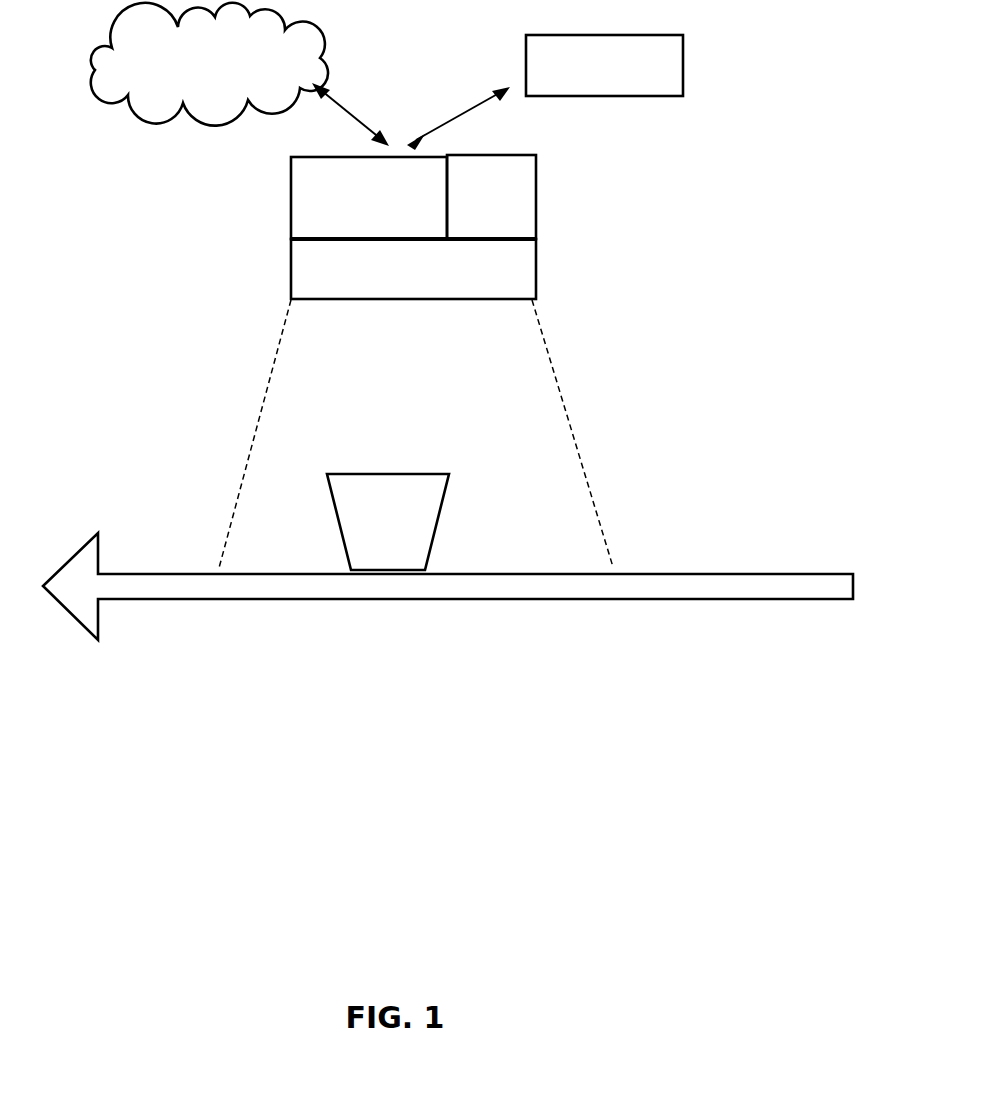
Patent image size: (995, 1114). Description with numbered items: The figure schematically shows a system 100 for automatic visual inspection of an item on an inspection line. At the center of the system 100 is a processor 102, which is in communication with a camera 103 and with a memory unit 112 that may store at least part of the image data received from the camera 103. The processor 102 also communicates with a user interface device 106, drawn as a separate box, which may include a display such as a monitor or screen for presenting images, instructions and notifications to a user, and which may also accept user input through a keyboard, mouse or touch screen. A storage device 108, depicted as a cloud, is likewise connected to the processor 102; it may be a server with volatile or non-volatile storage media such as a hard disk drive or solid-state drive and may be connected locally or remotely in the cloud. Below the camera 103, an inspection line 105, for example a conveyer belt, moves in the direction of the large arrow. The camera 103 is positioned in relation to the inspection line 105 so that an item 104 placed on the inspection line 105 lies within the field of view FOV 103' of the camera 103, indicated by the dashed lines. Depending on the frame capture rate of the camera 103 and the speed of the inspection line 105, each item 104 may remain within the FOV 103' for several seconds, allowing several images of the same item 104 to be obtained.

The system 100 is at (584, 196).
The processor 102 is at (377, 210).
The camera 103 is at (413, 269).
The FOV 103' is at (381, 434).
The item 104 is at (358, 530).
The inspection line 105 is at (293, 587).
The user interface device 106 is at (571, 82).
The storage device 108 is at (242, 72).
The memory unit 112 is at (521, 208).